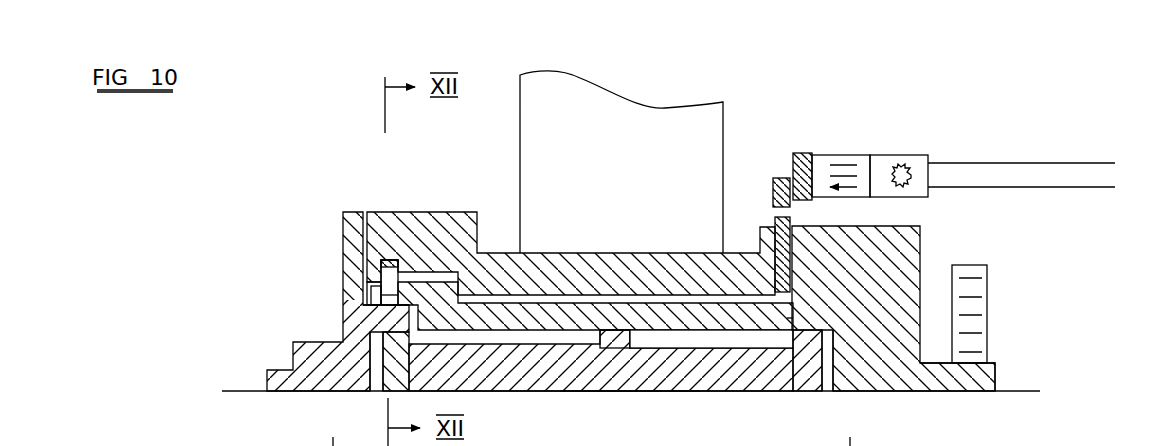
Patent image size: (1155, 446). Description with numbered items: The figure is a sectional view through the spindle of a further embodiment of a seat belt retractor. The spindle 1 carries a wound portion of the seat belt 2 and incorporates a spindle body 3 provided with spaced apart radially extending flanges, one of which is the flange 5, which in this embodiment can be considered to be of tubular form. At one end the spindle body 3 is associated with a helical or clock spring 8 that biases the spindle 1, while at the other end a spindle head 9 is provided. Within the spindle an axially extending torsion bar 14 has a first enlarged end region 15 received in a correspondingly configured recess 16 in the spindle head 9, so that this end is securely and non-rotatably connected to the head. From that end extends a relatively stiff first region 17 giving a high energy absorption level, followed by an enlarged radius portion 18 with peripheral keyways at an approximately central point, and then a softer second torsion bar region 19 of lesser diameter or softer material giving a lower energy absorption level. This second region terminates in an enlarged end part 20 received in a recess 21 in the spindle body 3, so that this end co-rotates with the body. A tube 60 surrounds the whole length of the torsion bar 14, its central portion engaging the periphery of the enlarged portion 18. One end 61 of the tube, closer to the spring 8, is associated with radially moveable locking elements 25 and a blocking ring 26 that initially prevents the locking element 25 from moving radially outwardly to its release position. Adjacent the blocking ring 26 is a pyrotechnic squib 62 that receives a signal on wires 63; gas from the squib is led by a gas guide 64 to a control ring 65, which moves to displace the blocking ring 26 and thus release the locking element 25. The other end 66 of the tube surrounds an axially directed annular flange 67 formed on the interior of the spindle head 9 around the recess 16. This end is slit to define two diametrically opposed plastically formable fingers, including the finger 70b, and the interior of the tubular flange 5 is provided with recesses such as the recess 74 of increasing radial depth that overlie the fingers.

The spindle 1 is at (947, 252).
The seat belt 2 is at (645, 113).
The spindle body 3 is at (878, 360).
The flange 5 is at (443, 211).
The spring 8 is at (988, 316).
The spindle head 9 is at (318, 373).
The torsion bar 14 is at (604, 398).
The first enlarged end region 15 is at (400, 362).
The recess 16 is at (377, 382).
The first region of the torsion bar 17 is at (536, 386).
The enlarged radius portion 18 is at (617, 332).
The second torsion bar region 19 is at (673, 396).
The enlarged end part 20 is at (812, 382).
The recess 21 is at (828, 382).
The locking element 25 is at (795, 246).
The blocking ring 26 is at (774, 186).
The tube 60 is at (737, 333).
The end of the tube 61 is at (787, 318).
The pyrotechnic squib 62 is at (890, 155).
The wires 63 is at (1000, 162).
The gas guide 64 is at (838, 155).
The control ring 65 is at (802, 153).
The other end of the tube 66 is at (435, 280).
The annular flange 67 is at (379, 319).
The deformable finger 70b is at (381, 276).
The recess 74 is at (386, 259).